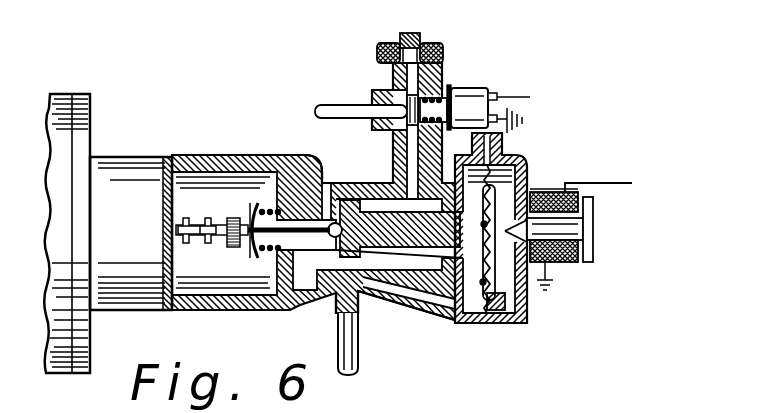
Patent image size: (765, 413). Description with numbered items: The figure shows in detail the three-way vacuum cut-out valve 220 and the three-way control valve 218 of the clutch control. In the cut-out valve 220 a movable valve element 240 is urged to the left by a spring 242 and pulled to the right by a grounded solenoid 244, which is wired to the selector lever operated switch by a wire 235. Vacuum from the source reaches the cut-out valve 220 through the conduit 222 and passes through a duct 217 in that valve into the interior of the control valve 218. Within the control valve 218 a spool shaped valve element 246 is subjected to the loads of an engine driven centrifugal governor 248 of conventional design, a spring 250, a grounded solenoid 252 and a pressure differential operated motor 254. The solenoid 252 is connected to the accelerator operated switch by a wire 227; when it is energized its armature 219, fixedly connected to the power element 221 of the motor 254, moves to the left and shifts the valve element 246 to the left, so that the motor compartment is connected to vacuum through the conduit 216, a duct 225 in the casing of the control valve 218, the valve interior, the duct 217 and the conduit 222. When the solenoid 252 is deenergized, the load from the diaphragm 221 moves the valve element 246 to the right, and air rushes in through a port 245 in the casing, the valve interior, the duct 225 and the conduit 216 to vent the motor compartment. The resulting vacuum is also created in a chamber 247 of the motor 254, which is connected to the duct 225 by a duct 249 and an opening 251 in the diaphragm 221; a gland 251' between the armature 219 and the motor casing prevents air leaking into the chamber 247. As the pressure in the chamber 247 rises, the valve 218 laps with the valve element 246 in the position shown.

The conduit 216 is at (358, 370).
The duct 217 is at (395, 163).
The three-way control valve 218 is at (425, 323).
The armature 219 is at (538, 228).
The vacuum cut-out valve 220 is at (369, 78).
The power element 221 is at (483, 290).
The conduit 222 is at (345, 106).
The duct 225 is at (340, 300).
The wire 227 is at (615, 183).
The wire 235 is at (519, 96).
The movable valve element 240 is at (415, 111).
The spring 242 is at (437, 97).
The grounded solenoid 244 is at (472, 95).
The port 245 is at (320, 168).
The spool shaped valve element 246 is at (350, 266).
The chamber 247 is at (508, 284).
The engine driven centrifugal governor 248 is at (112, 180).
The duct 249 is at (397, 289).
The spring 250 is at (257, 205).
The opening 251 is at (511, 273).
The gland 251' is at (547, 194).
The grounded solenoid 252 is at (566, 264).
The pressure differential operated motor 254 is at (526, 149).